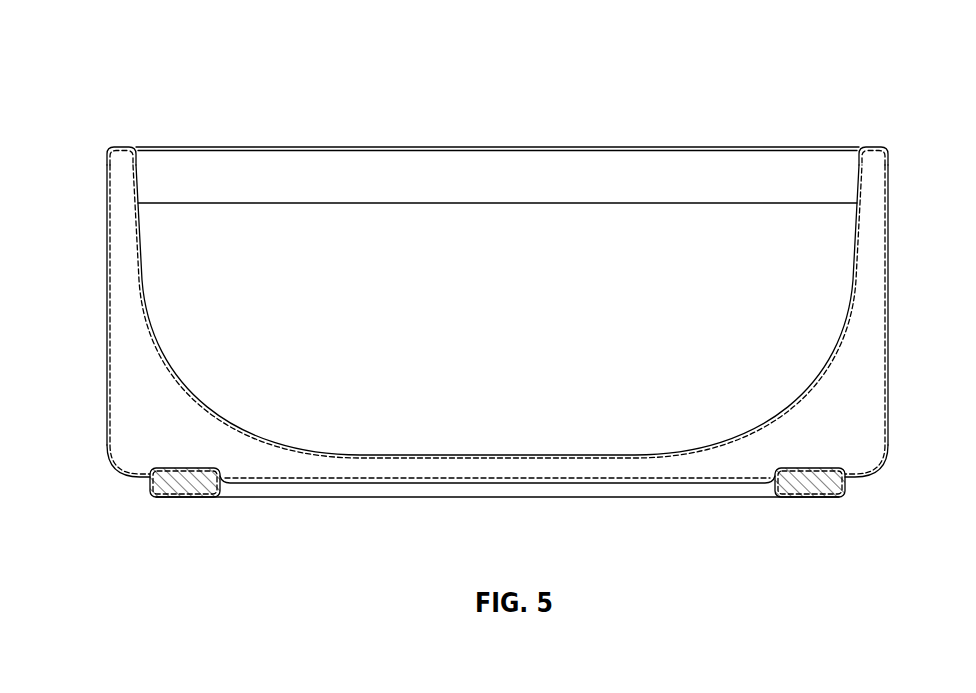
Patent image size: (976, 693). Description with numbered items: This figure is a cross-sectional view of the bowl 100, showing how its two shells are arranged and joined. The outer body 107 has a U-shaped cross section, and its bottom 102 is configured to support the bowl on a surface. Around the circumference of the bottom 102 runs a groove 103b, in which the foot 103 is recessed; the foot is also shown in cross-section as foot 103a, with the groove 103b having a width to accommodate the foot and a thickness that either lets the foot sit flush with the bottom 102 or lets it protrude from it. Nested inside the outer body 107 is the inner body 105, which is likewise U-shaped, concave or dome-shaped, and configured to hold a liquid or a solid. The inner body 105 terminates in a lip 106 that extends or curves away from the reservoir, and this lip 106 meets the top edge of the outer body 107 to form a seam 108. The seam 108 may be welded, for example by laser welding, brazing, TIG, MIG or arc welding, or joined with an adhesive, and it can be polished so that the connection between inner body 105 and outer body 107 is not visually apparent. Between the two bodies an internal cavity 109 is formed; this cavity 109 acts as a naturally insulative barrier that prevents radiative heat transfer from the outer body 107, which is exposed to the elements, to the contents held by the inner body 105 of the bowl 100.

The bowl 100 is at (124, 37).
The bottom 102 is at (682, 507).
The foot 103 is at (538, 498).
The cross-sectional view of the foot 103a is at (181, 486).
The groove 103b is at (161, 465).
The inner body 105 is at (812, 400).
The lip 106 is at (872, 146).
The outer body 107 is at (108, 272).
The seam 108 is at (112, 146).
The internal cavity 109 is at (150, 417).